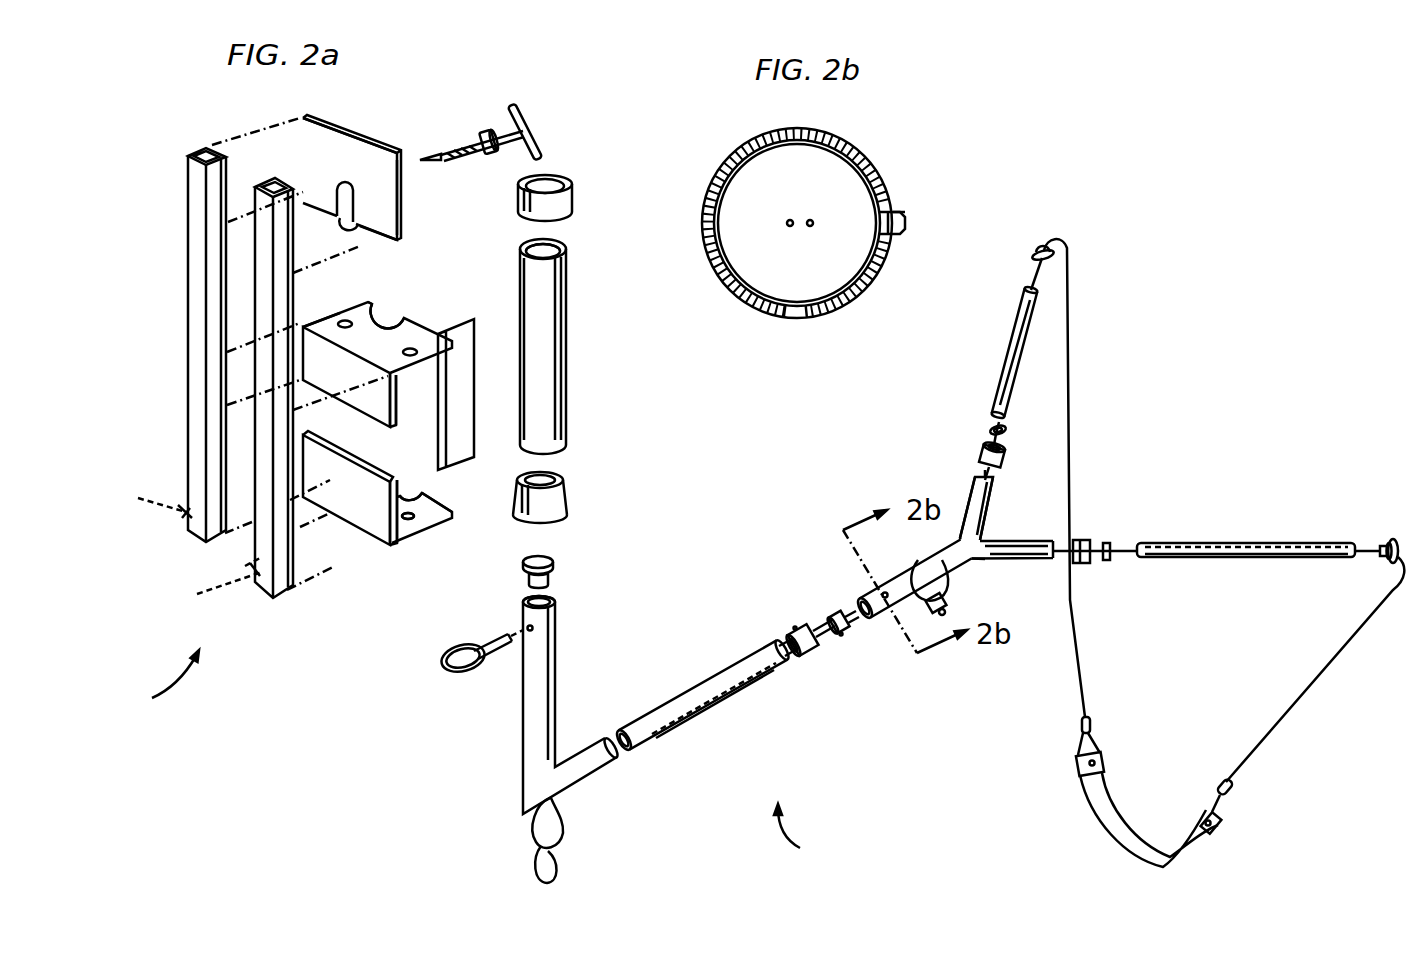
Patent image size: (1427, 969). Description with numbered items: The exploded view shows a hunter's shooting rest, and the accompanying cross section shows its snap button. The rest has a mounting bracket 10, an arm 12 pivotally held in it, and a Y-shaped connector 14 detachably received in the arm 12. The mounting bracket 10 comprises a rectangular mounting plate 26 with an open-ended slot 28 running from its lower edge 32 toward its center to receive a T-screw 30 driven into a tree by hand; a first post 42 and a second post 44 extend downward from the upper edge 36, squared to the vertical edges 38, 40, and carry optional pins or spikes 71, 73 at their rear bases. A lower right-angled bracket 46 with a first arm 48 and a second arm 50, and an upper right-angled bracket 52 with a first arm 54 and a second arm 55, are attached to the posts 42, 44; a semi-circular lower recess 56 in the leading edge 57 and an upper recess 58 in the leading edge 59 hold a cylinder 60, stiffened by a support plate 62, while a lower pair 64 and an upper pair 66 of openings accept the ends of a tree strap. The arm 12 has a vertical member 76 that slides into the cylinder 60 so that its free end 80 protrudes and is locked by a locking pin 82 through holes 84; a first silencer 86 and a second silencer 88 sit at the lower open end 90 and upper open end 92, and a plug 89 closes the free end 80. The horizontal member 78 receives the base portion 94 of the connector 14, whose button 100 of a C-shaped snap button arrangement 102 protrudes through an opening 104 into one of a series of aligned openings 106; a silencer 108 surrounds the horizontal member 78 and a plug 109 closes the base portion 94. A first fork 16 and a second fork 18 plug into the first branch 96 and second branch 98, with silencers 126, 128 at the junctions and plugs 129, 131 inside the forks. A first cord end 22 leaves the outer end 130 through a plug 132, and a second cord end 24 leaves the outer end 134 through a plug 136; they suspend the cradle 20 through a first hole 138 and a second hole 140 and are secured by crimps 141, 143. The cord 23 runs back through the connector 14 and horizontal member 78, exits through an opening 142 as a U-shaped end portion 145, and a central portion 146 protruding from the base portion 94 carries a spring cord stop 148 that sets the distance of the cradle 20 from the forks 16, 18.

In FIG. 2A, the mounting bracket 10 is at (157, 682).
In FIG. 2A, the arm 12 is at (809, 838).
In FIG. 2A, the Y-shaped connector 14 is at (971, 561).
In FIG. 2A, the first fork 16 is at (1303, 543).
In FIG. 2A, the second fork 18 is at (1000, 374).
In FIG. 2A, the cradle 20 is at (1135, 858).
In FIG. 2A, the first cord end 22 is at (1318, 674).
In FIG. 2A, the cord 23 is at (795, 627).
In FIG. 2B, the cord 23 is at (810, 227).
In FIG. 2A, the second cord end 24 is at (1075, 620).
In FIG. 2A, the mounting plate 26 is at (352, 177).
In FIG. 2A, the slot 28 is at (399, 233).
In FIG. 2A, the T-screw 30 is at (532, 126).
In FIG. 2A, the lower edge 32 is at (330, 206).
In FIG. 2A, the upper edge 36 is at (368, 140).
In FIG. 2A, the vertical edge 38 is at (403, 194).
In FIG. 2A, the vertical edge 40 is at (300, 147).
In FIG. 2A, the first post 42 is at (279, 600).
In FIG. 2A, the second post 44 is at (188, 255).
In FIG. 2A, the lower right-angled bracket 46 is at (390, 548).
In FIG. 2A, the first arm 48 is at (380, 531).
In FIG. 2A, the second arm 50 is at (428, 538).
In FIG. 2A, the upper right-angled bracket 52 is at (392, 394).
In FIG. 2A, the first arm 54 is at (303, 360).
In FIG. 2A, the second arm 55 is at (338, 318).
In FIG. 2A, the lower recess 56 is at (408, 496).
In FIG. 2A, the leading edge 57 is at (432, 513).
In FIG. 2A, the upper recess 58 is at (390, 330).
In FIG. 2A, the leading edge 59 is at (378, 308).
In FIG. 2A, the cylinder 60 is at (568, 365).
In FIG. 2A, the support plate 62 is at (462, 400).
In FIG. 2A, the lower pair of aligned openings 64 is at (412, 520).
In FIG. 2A, the upper pair of aligned openings 66 is at (413, 350).
In FIG. 2A, the pin or spike 71 is at (215, 584).
In FIG. 2A, the pin or spike 73 is at (149, 499).
In FIG. 2A, the vertical member 76 is at (523, 735).
In FIG. 2A, the horizontal member 78 is at (662, 712).
In FIG. 2A, the free end 80 is at (523, 617).
In FIG. 2A, the locking pin 82 is at (455, 677).
In FIG. 2A, the aligned holes 84 is at (533, 630).
In FIG. 2A, the first silencer 86 is at (561, 502).
In FIG. 2A, the second silencer 88 is at (573, 199).
In FIG. 2A, the plug 89 is at (556, 569).
In FIG. 2A, the lower open end 90 is at (548, 449).
In FIG. 2A, the upper open end 92 is at (552, 254).
In FIG. 2A, the base portion 94 is at (863, 597).
In FIG. 2B, the base portion 94 is at (853, 148).
In FIG. 2A, the first branch 96 is at (1035, 561).
In FIG. 2A, the second branch 98 is at (988, 502).
In FIG. 2B, the button 100 is at (908, 224).
In FIG. 2B, the C-shaped snap button arrangement 102 is at (862, 180).
In FIG. 2A, the opening 104 is at (887, 592).
In FIG. 2B, the opening 104 is at (907, 214).
In FIG. 2A, the series of aligned openings 106 is at (707, 714).
In FIG. 2A, the silencer 108 is at (798, 627).
In FIG. 2A, the plug 109 is at (839, 636).
In FIG. 2A, the first silencer 126 is at (1081, 538).
In FIG. 2A, the second silencer 128 is at (980, 458).
In FIG. 2A, the plug 129 is at (1108, 543).
In FIG. 2A, the outer end 130 is at (1380, 546).
In FIG. 2A, the plug 131 is at (989, 428).
In FIG. 2A, the plug 132 is at (1395, 539).
In FIG. 2A, the outer end 134 is at (1030, 289).
In FIG. 2A, the plug 136 is at (1040, 241).
In FIG. 2A, the first hole 138 is at (1207, 833).
In FIG. 2A, the second hole 140 is at (1079, 769).
In FIG. 2A, the crimp 141 is at (1234, 789).
In FIG. 2A, the opening 142 is at (566, 816).
In FIG. 2A, the crimp 143 is at (1080, 728).
In FIG. 2A, the end portion 145 is at (538, 875).
In FIG. 2A, the central portion 146 is at (920, 612).
In FIG. 2A, the spring cord stop 148 is at (937, 616).